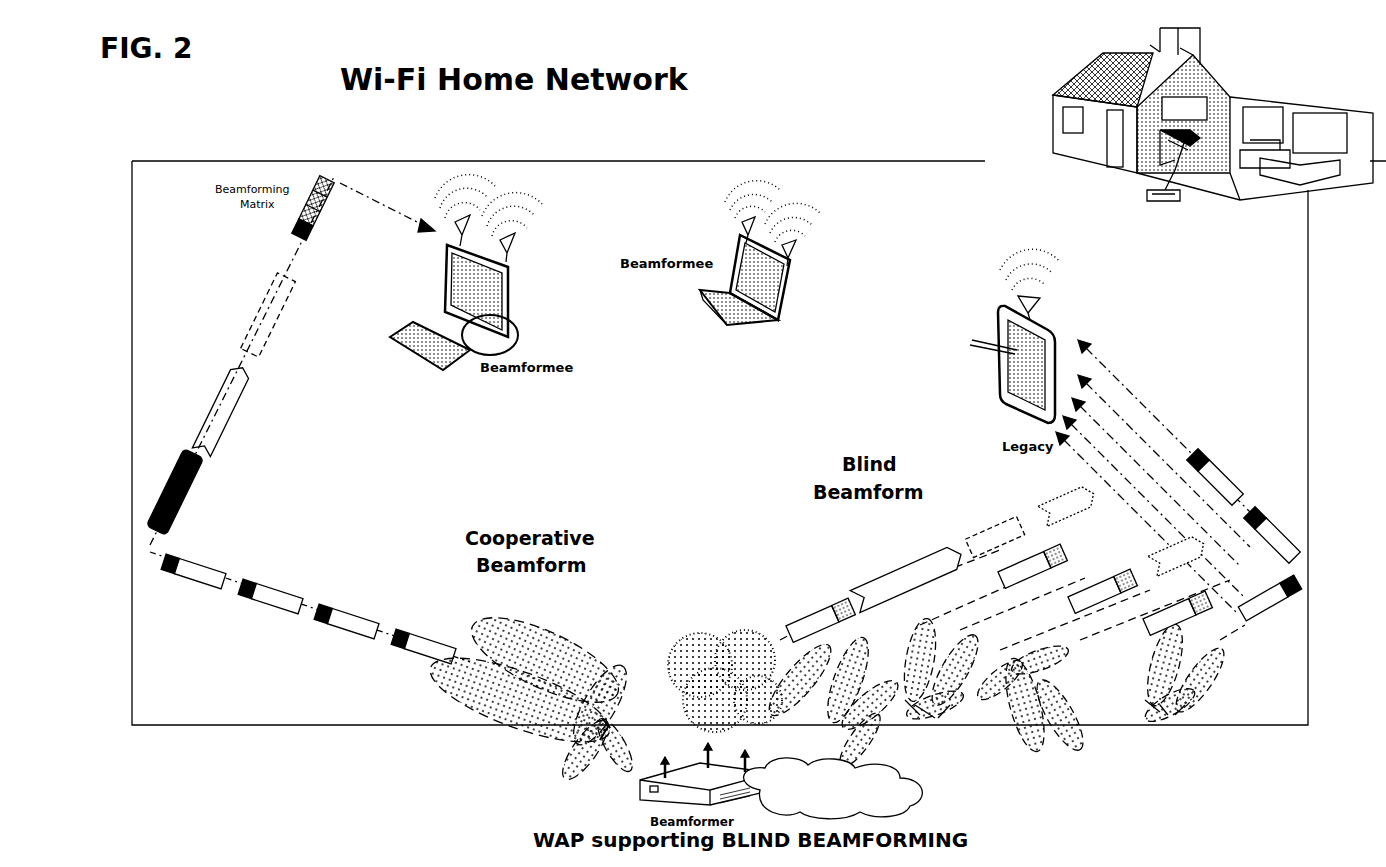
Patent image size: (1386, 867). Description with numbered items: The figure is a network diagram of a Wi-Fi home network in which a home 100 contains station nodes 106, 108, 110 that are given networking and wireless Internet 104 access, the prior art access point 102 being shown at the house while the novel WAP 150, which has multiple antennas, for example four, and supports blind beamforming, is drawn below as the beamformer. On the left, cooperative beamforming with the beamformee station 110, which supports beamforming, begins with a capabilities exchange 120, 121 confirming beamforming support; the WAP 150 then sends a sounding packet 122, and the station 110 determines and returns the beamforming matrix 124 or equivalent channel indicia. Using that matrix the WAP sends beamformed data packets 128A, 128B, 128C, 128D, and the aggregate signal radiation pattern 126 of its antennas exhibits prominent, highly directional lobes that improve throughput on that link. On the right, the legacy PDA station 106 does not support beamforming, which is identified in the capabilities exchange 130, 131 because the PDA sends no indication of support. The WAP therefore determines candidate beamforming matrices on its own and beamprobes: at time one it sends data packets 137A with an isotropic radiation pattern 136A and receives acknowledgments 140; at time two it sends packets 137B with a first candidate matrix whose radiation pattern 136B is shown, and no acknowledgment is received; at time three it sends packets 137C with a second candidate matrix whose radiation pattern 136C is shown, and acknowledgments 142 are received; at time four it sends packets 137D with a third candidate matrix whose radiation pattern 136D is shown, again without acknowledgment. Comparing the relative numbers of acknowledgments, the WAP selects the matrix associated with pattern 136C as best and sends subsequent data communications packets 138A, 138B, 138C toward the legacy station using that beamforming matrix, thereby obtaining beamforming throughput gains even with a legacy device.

The home 100 is at (985, 161).
The wireless access point node 102 is at (1147, 197).
The Internet 104 is at (912, 780).
The legacy station (PDA) 106 is at (1012, 415).
The station node 108 is at (740, 322).
The beamformee station 110 is at (447, 283).
The capabilities exchange 120 is at (234, 398).
The capabilities exchange 121 is at (270, 338).
The sounding packet 122 is at (192, 490).
The beamforming matrix 124 is at (306, 230).
The aggregate signal radiation pattern 126 is at (518, 633).
The beamformed data packet 128A is at (206, 550).
The beamformed data packet 128B is at (287, 582).
The beamformed data packet 128C is at (363, 606).
The beamformed data packet 128D is at (437, 632).
The capabilities exchange 130 is at (930, 562).
The capabilities exchange 131 is at (1000, 526).
The isotropic radiation pattern 136A is at (735, 632).
The radiation pattern 136B is at (825, 652).
The radiation pattern 136C is at (958, 645).
The radiation pattern 136D is at (1040, 672).
The data packet 137A is at (810, 612).
The data packet 137B is at (1012, 572).
The data packet 137C is at (1075, 592).
The data packet 137D is at (1150, 611).
The data communications packet 138A is at (1200, 458).
The data communications packet 138B is at (1258, 519).
The data communications packet 138C is at (1268, 616).
The receipt acknowledgment (ACK) 140 is at (1048, 504).
The receipt acknowledgment (ACK) 142 is at (1160, 553).
The wireless access point (WAP) 150 is at (640, 792).